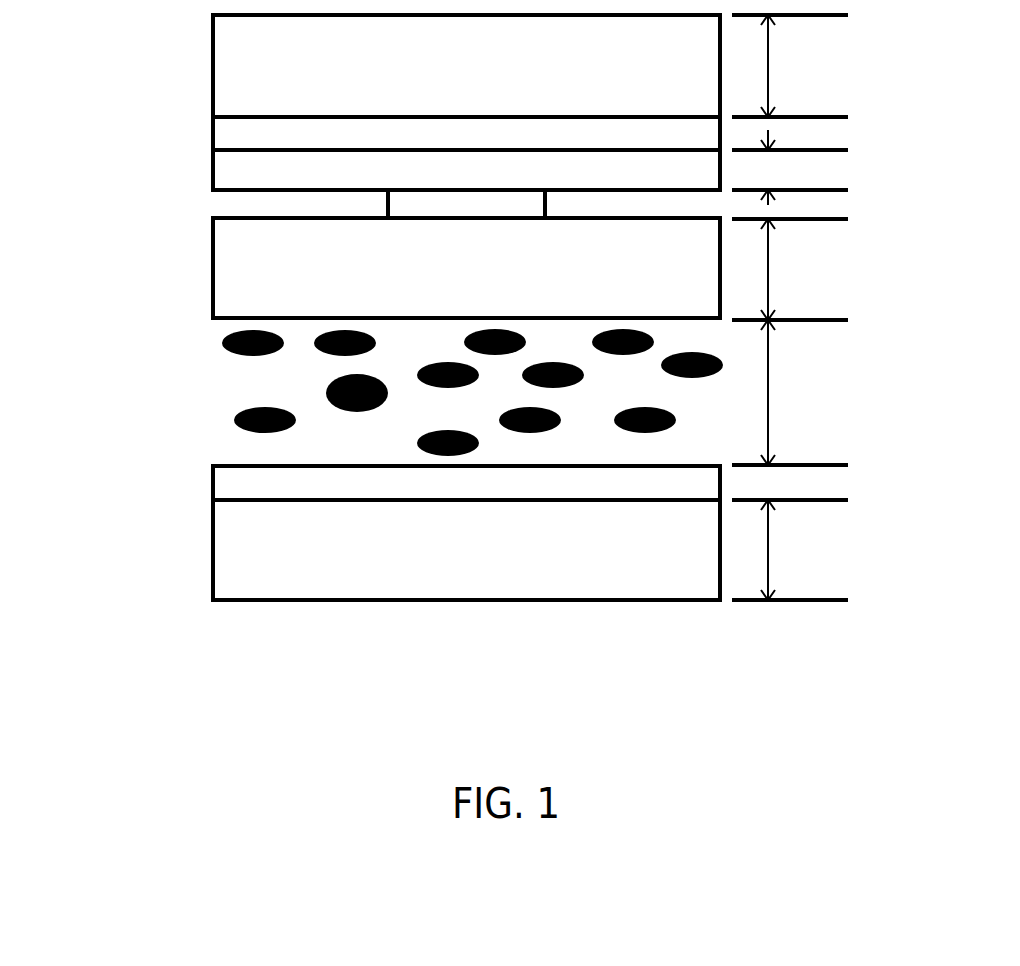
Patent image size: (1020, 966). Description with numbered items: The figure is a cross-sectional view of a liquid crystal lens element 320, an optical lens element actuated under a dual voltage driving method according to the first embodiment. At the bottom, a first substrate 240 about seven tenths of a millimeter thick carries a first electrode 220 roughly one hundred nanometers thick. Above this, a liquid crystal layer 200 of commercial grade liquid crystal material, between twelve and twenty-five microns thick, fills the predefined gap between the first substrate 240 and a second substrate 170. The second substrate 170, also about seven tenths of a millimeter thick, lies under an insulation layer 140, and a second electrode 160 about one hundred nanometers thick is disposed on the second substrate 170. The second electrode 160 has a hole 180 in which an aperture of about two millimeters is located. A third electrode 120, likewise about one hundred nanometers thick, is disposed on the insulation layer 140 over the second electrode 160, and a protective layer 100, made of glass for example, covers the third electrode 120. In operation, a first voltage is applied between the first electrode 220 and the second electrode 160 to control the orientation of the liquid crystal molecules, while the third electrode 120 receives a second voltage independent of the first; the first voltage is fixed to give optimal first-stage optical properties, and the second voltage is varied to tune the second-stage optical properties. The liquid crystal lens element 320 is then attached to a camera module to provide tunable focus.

The protective layer 100 is at (218, 50).
The third electrode 120 is at (218, 140).
The insulation layer 140 is at (218, 175).
The second electrode 160 is at (218, 207).
The second substrate 170 is at (213, 308).
The hole 180 is at (465, 208).
The liquid crystal layer 200 is at (258, 388).
The first electrode 220 is at (218, 478).
The first substrate 240 is at (218, 543).
The liquid crystal lens element 320 is at (893, 685).